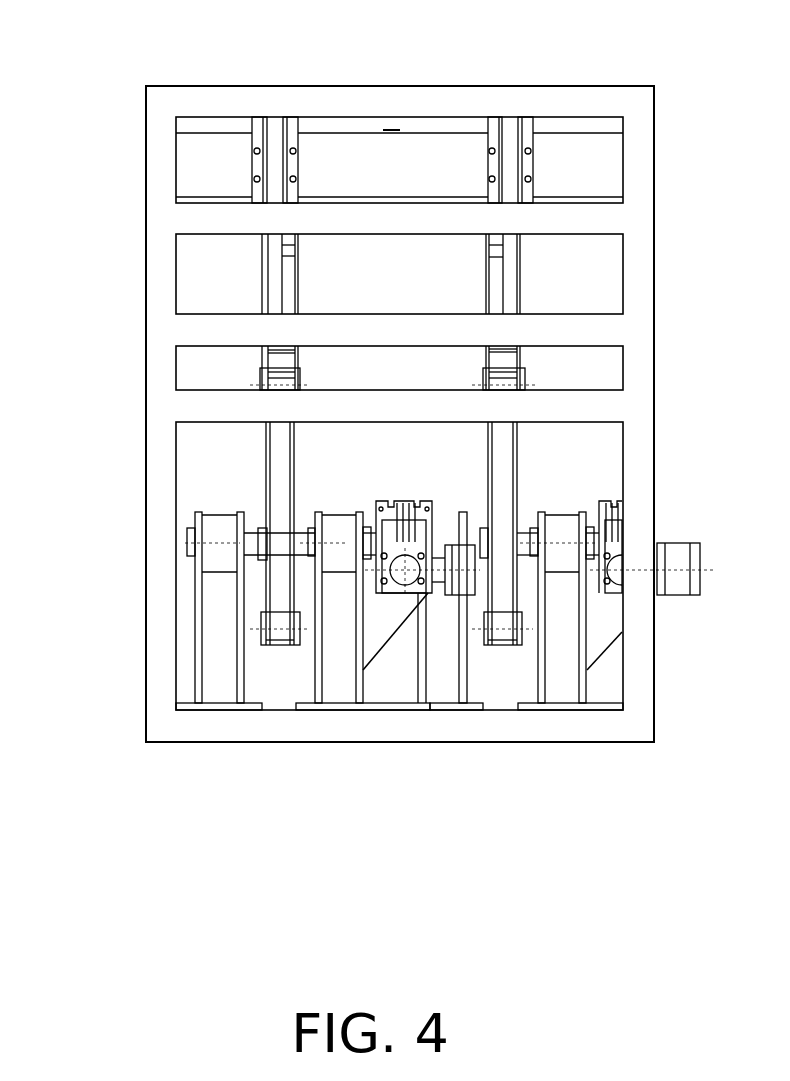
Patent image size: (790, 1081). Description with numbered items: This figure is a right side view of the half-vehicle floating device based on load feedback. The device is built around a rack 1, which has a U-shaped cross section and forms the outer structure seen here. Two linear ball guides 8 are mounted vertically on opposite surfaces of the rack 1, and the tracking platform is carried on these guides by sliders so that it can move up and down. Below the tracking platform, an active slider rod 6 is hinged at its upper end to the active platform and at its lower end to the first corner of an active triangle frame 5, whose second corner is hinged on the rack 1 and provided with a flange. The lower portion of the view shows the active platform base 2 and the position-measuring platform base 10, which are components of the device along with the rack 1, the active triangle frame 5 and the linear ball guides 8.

The rack 1 is at (163, 107).
The linear ball guide 8 is at (238, 180).
The active slider rod 6 is at (285, 275).
The active triangle frame 5 is at (277, 457).
The active platform base 2 is at (340, 573).
The position-measuring platform base 10 is at (217, 630).